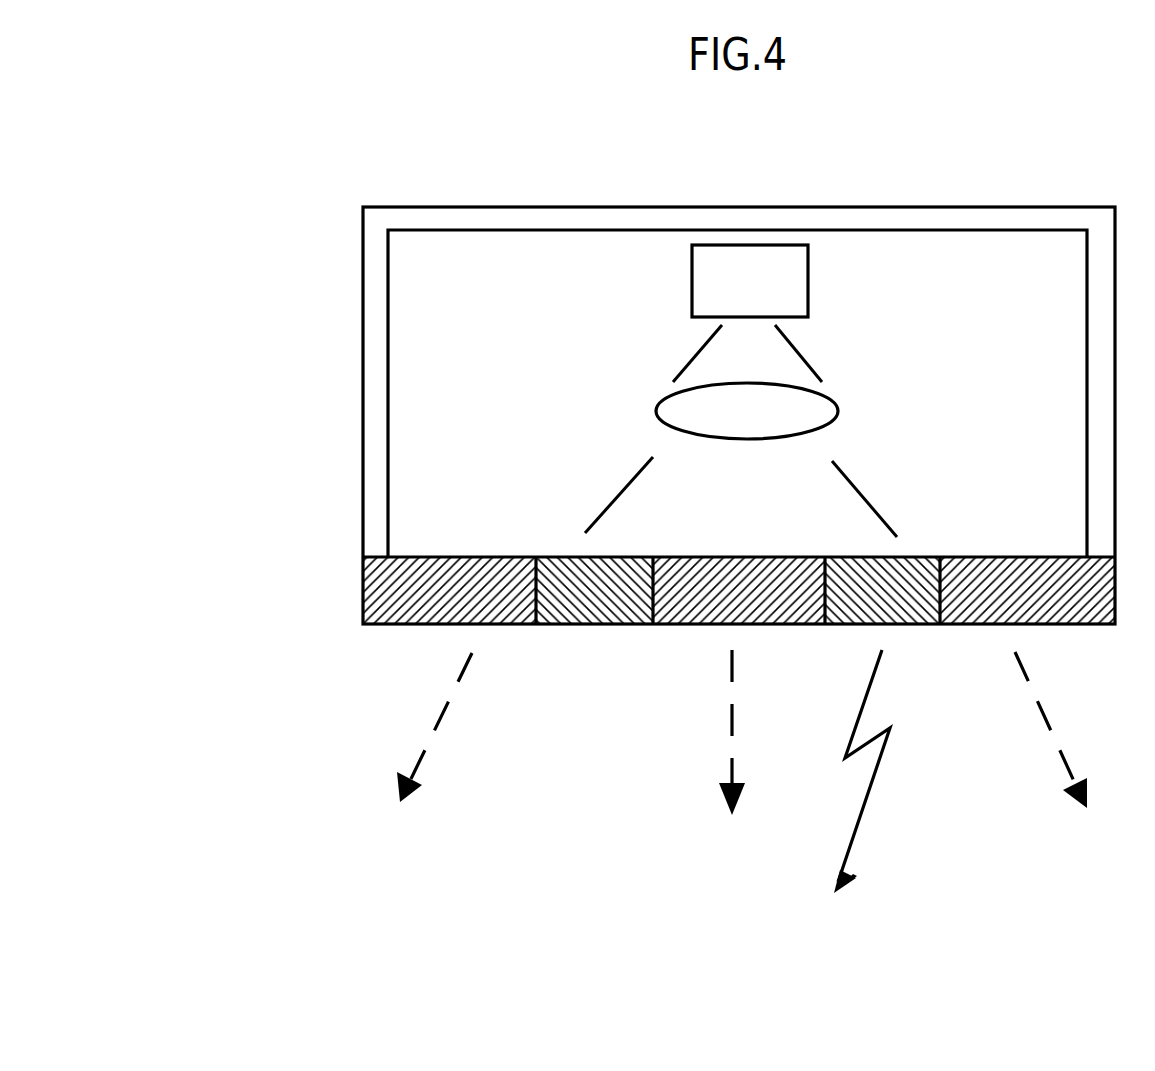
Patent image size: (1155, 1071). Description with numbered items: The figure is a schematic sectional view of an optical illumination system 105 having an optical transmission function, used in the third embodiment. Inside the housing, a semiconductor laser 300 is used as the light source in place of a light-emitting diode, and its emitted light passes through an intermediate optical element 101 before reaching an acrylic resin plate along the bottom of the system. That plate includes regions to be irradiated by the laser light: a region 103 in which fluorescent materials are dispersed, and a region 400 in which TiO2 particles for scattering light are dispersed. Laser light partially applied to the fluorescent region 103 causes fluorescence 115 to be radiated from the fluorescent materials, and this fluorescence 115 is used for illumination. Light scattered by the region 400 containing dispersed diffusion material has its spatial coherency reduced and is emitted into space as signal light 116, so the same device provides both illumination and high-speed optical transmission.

The optical illumination system 105 is at (318, 263).
The semiconductor laser 300 is at (730, 287).
The lens 101 is at (708, 408).
The region where fluorescent materials are dispersed 103 is at (398, 585).
The region where TiO2 particles are dispersed 400 is at (580, 600).
The signal light 116 is at (822, 725).
The fluorescence 115 is at (393, 772).